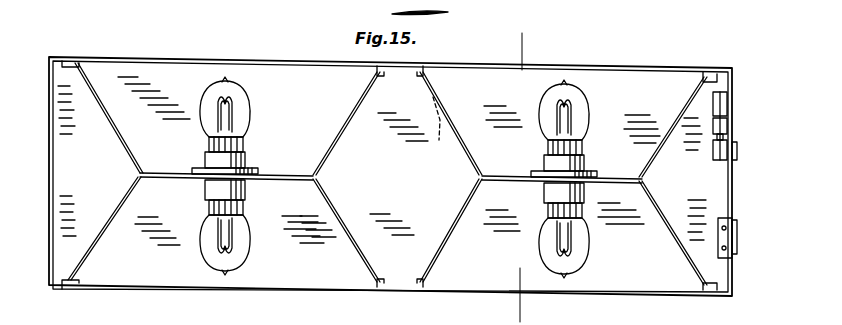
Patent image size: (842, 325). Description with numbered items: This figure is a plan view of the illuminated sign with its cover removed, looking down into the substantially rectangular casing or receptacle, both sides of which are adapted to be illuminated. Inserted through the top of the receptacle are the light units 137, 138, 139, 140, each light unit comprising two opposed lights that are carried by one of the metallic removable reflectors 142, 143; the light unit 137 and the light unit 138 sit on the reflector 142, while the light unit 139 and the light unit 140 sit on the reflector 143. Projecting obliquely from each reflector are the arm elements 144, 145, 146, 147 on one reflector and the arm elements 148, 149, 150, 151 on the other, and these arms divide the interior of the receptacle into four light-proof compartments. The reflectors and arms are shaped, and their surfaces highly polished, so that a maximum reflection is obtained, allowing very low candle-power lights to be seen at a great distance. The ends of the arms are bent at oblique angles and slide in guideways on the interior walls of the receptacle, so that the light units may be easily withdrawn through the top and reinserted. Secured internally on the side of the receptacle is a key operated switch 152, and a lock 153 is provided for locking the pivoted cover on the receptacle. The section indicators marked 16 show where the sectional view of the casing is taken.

The section line of FIG. 16 is at (508, 47).
The light unit 137 is at (242, 107).
The light unit 138 is at (264, 245).
The light unit 139 is at (573, 97).
The light unit 140 is at (584, 250).
The metallic removable reflector 142 is at (166, 170).
The metallic removable reflector 143 is at (507, 178).
The arm element 144 is at (97, 88).
The arm element 145 is at (105, 239).
The arm element 146 is at (353, 251).
The arm element 147 is at (361, 99).
The arm element 148 is at (437, 91).
The arm element 149 is at (445, 247).
The arm element 150 is at (687, 265).
The arm element 151 is at (688, 100).
The key operated switch 152 is at (720, 132).
The lock 153 is at (732, 237).